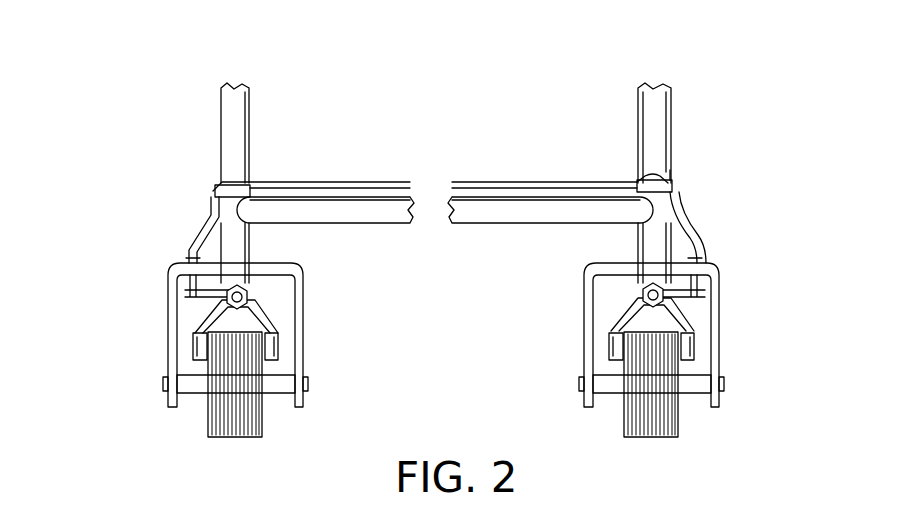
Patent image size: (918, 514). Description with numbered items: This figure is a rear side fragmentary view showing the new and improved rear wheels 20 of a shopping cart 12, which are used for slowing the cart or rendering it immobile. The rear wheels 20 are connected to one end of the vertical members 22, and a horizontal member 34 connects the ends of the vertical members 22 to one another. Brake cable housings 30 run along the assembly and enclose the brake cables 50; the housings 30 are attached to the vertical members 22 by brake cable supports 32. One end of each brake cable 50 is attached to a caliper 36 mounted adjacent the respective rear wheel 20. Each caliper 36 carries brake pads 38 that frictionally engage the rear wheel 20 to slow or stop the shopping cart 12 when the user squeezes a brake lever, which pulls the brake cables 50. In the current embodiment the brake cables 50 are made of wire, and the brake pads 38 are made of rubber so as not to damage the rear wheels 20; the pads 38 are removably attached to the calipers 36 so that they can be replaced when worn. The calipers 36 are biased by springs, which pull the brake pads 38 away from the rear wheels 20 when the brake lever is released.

The shopping cart 12 is at (699, 144).
The rear wheels 20 is at (235, 440).
The vertical members 22 is at (490, 144).
The brake cable housings 30 is at (527, 157).
The brake cable supports 32 is at (215, 191).
The horizontal member 34 is at (515, 203).
The calipers 36 is at (283, 333).
The brake pads 38 is at (197, 362).
The brake cables 50 is at (183, 283).